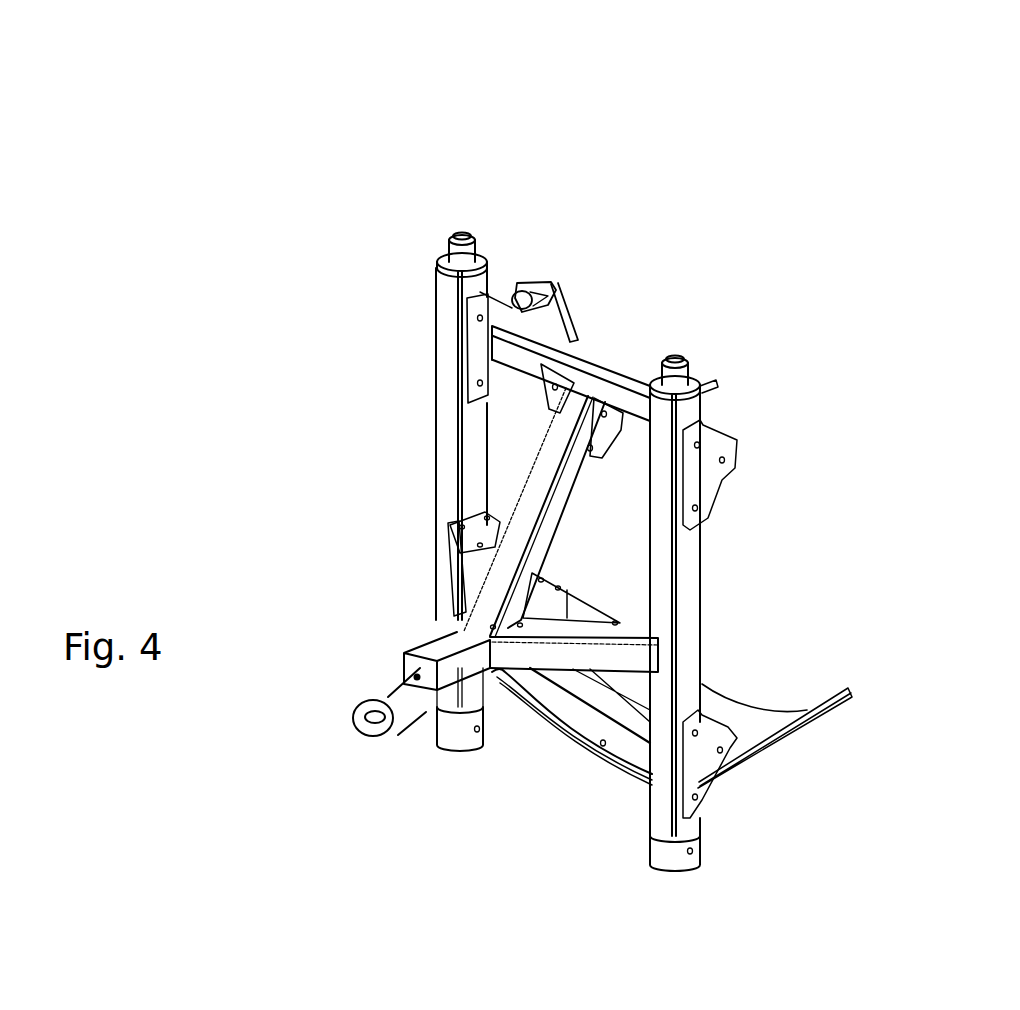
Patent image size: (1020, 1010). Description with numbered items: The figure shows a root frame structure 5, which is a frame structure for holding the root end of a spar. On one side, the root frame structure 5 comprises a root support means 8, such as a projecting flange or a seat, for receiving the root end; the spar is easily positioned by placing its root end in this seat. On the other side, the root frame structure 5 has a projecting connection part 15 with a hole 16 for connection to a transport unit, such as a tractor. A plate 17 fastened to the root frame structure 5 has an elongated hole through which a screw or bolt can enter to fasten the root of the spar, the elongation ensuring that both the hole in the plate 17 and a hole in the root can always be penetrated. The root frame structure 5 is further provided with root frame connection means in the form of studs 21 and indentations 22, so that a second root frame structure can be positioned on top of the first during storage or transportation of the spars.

The root frame structure 5 is at (741, 132).
The root support means 8 is at (749, 723).
The projecting connection part 15 is at (410, 647).
The hole 16 is at (350, 722).
The plate 17 is at (562, 292).
The studs 21 is at (438, 250).
The indentations 22 is at (655, 871).